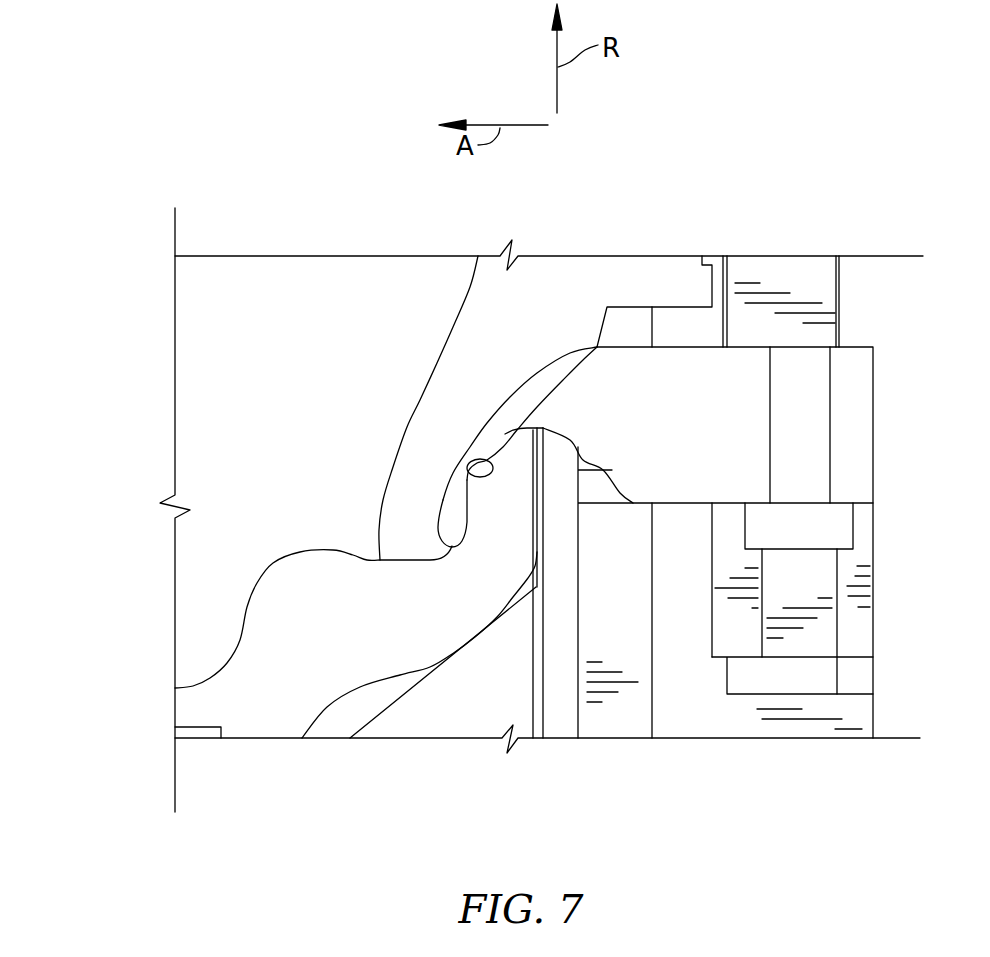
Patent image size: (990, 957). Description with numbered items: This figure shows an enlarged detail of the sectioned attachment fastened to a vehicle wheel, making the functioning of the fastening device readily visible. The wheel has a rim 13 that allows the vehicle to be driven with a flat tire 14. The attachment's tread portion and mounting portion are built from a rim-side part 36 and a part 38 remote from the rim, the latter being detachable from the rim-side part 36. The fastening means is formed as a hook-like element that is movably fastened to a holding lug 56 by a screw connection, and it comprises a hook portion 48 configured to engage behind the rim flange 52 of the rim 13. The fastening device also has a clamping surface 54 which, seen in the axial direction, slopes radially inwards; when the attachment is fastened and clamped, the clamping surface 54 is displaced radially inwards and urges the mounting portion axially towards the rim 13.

The rim 13 is at (250, 663).
The flat tire 14 is at (477, 333).
The rim-side part 36 is at (601, 725).
The part remote from the rim 38 is at (689, 725).
The hook portion 48 is at (520, 410).
The rim flange 52 is at (483, 522).
The clamping surface 54 is at (490, 477).
The holding lug 56 is at (852, 603).